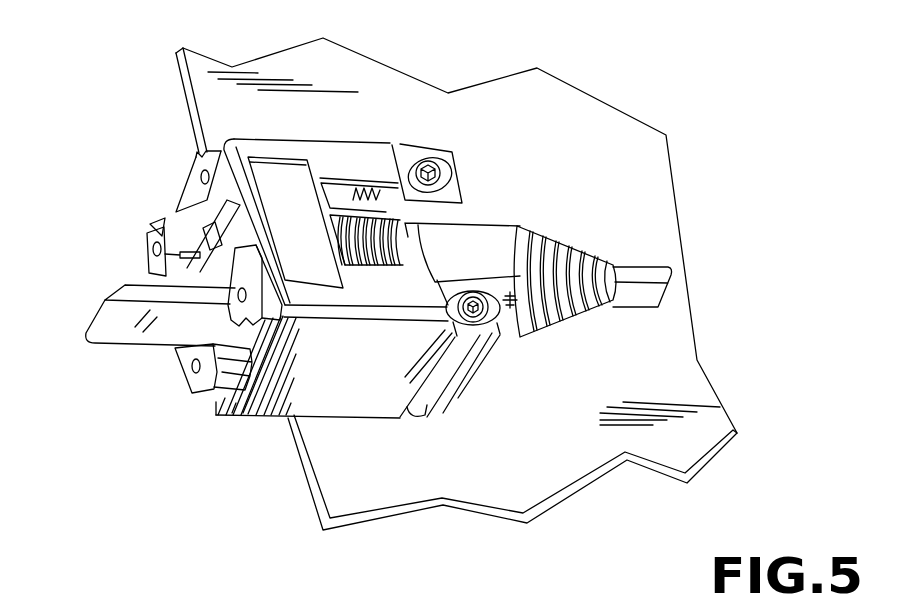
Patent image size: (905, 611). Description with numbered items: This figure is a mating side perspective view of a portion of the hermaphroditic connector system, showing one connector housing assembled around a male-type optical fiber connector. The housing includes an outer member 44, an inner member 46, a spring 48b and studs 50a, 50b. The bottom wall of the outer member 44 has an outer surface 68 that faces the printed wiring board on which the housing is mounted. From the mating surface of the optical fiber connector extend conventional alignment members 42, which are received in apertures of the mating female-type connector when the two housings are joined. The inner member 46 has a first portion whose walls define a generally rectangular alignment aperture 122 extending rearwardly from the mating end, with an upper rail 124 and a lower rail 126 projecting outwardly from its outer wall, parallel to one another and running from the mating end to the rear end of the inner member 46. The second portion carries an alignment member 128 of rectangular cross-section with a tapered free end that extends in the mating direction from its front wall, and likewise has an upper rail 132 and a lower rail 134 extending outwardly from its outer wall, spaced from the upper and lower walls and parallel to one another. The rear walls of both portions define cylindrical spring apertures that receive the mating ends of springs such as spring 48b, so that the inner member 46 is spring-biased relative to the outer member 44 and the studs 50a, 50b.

The alignment members 42 is at (150, 251).
The outer member 44 is at (383, 385).
The inner member 46 is at (187, 352).
The spring 48b is at (373, 190).
The stud 50a is at (427, 395).
The stud 50b is at (433, 167).
The outer surface 68 is at (213, 402).
The alignment aperture 122 is at (176, 207).
The upper rail 124 is at (199, 153).
The lower rail 126 is at (160, 223).
The alignment member 128 is at (107, 325).
The upper rail 132 is at (265, 320).
The lower rail 134 is at (235, 415).